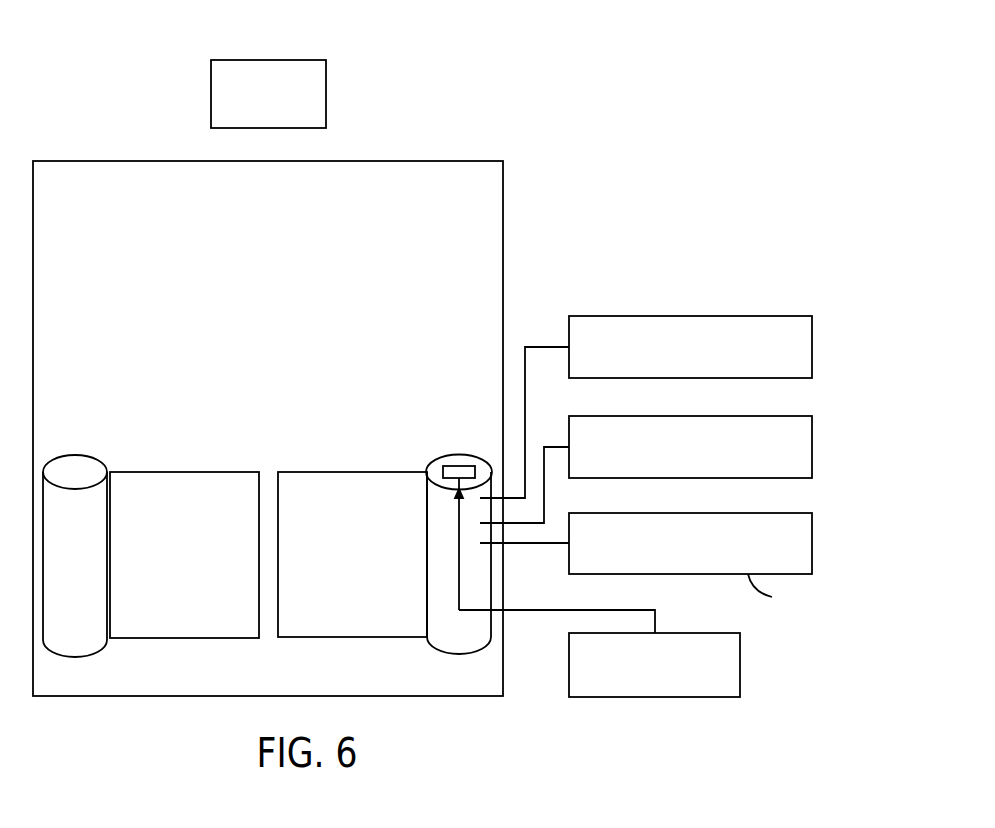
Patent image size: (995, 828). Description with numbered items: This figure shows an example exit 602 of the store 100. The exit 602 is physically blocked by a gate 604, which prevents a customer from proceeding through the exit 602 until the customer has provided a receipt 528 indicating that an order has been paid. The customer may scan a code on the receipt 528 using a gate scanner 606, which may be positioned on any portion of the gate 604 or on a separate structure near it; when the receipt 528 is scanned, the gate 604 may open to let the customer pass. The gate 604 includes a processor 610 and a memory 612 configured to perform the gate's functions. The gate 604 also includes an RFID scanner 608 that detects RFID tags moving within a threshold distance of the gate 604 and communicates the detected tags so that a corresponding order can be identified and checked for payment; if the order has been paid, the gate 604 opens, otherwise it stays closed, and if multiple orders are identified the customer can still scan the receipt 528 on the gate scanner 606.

The store 100 is at (250, 39).
The exit 602 is at (403, 160).
The gate 604 is at (449, 653).
The gate scanner 606 is at (457, 466).
The RFID scanner 608 is at (812, 542).
The processor 610 is at (812, 347).
The memory 612 is at (812, 447).
The receipt 528 is at (655, 697).